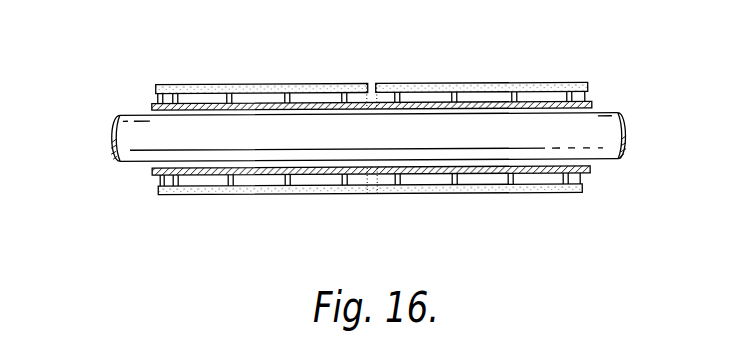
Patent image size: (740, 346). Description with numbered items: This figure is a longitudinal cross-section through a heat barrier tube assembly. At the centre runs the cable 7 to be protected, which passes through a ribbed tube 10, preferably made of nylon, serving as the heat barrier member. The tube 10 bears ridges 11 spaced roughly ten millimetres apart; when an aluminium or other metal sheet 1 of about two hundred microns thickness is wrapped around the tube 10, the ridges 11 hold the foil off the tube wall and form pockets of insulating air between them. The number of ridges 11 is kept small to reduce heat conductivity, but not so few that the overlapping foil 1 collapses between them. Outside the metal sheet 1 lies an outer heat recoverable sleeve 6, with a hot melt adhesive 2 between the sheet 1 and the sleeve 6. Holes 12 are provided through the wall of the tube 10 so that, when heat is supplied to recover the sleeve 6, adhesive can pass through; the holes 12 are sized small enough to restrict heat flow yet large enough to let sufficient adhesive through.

The metal sheet 1 is at (264, 84).
The hot melt adhesive 2 is at (214, 194).
The heat recoverable sleeve 6 is at (206, 84).
The cable 7 is at (119, 123).
The tube 10 is at (544, 90).
The ridges 11 is at (449, 92).
The holes 12 is at (371, 192).